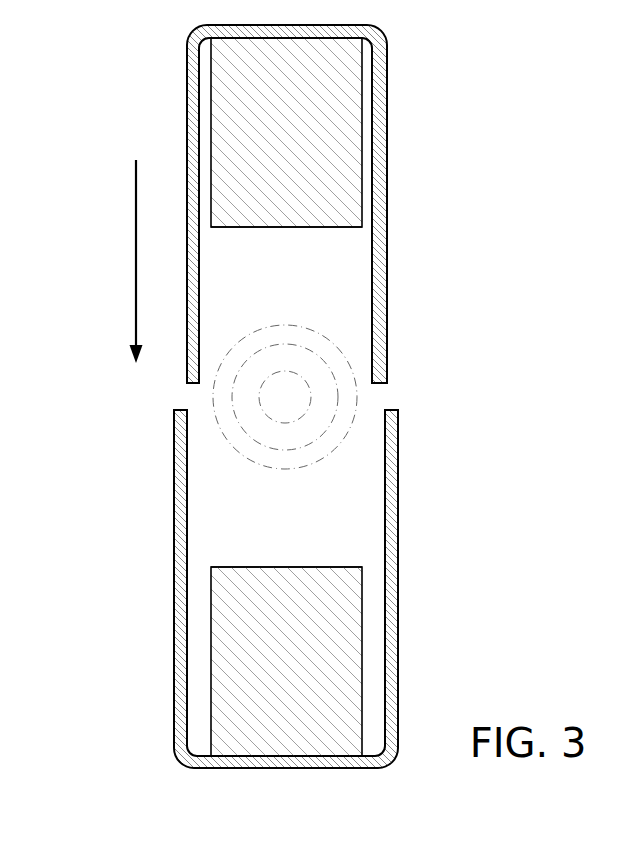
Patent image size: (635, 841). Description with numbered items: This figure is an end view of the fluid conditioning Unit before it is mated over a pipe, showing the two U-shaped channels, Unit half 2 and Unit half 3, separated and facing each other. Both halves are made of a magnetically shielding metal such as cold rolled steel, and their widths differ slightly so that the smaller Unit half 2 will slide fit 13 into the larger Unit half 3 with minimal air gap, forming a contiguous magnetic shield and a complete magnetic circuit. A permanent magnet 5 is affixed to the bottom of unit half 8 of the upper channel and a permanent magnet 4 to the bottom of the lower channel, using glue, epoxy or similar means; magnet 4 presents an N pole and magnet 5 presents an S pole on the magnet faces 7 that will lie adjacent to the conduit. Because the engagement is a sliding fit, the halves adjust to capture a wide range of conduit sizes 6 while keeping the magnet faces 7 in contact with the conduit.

The Unit half 2 is at (387, 143).
The Unit half 3 is at (398, 617).
The permanent magnet 4 is at (210, 658).
The permanent magnet 5 is at (210, 132).
The conduit size 6 is at (348, 362).
The magnet pole face 7 is at (320, 227).
The bottom of unit half 8 is at (235, 38).
The slide fit 13 is at (136, 260).